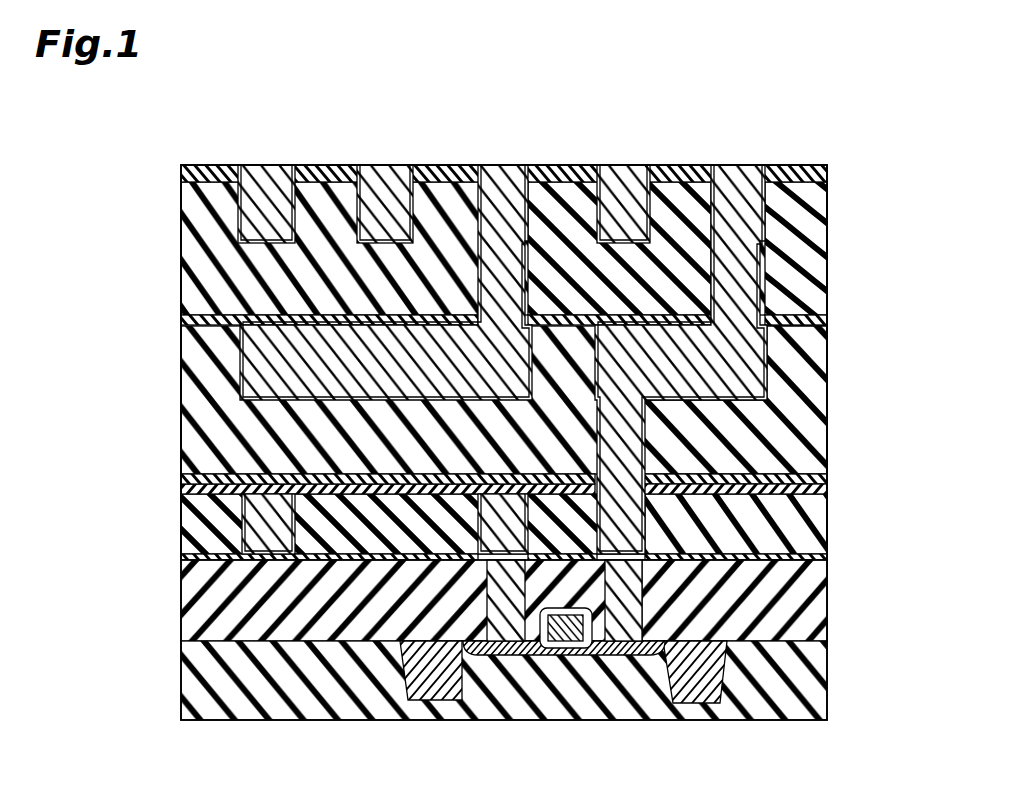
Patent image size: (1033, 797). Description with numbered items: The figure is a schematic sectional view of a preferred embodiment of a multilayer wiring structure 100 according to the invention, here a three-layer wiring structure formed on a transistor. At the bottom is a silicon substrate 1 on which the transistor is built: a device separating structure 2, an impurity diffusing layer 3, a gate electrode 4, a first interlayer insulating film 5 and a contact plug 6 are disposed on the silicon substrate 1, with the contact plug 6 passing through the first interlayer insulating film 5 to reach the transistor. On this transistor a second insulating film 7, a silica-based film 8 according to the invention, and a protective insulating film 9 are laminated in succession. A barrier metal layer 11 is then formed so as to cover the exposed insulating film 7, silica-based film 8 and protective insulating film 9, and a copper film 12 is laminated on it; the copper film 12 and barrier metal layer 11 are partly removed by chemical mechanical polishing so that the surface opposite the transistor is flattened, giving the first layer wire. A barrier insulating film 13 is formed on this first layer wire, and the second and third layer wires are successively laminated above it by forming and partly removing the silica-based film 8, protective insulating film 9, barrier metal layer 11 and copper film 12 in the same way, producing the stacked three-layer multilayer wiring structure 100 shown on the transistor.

The silicon substrate 1 is at (828, 673).
The device separating structure 2 is at (702, 680).
The impurity diffusing layer 3 is at (627, 650).
The gate electrode 4 is at (565, 632).
The first interlayer insulating film 5 is at (828, 600).
The contact plug 6 is at (507, 630).
The second insulating film 7 is at (828, 556).
The silica-based film 8 is at (828, 246).
The protective insulating film 9 is at (828, 172).
The barrier metal layer 11 is at (240, 383).
The copper film 12 is at (243, 354).
The barrier insulating film 13 is at (183, 320).
The multilayer wiring structure 100 is at (888, 160).